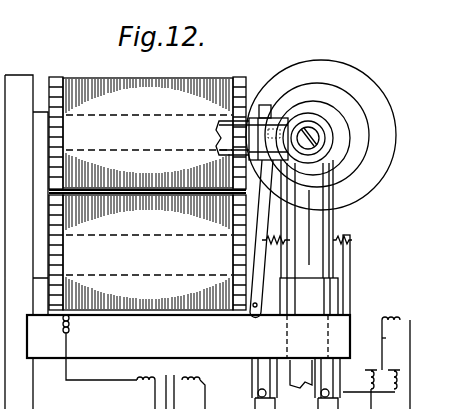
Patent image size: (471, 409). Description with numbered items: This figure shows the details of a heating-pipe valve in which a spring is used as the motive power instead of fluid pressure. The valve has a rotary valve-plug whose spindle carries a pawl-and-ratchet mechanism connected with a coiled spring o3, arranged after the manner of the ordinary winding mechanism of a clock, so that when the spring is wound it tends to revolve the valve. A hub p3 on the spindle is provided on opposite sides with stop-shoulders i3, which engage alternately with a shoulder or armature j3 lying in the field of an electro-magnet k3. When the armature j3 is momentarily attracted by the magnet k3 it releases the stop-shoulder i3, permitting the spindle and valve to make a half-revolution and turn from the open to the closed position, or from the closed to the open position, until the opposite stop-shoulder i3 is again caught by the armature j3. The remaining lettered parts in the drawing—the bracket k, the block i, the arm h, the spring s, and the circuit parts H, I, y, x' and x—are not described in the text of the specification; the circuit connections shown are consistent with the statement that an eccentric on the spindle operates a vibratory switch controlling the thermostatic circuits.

The electro-magnet k3 is at (150, 147).
The bracket k is at (232, 148).
The armature block i is at (268, 132).
The coiled spring o3 is at (381, 98).
The hub p3 is at (317, 117).
The stop-shoulders i3 is at (326, 139).
The arm h is at (309, 237).
The armature j3 is at (261, 239).
The spring s is at (307, 250).
The battery circuit H is at (148, 404).
The circuit I is at (385, 363).
The wire y is at (390, 338).
The contact x' is at (363, 389).
The contact x is at (372, 387).